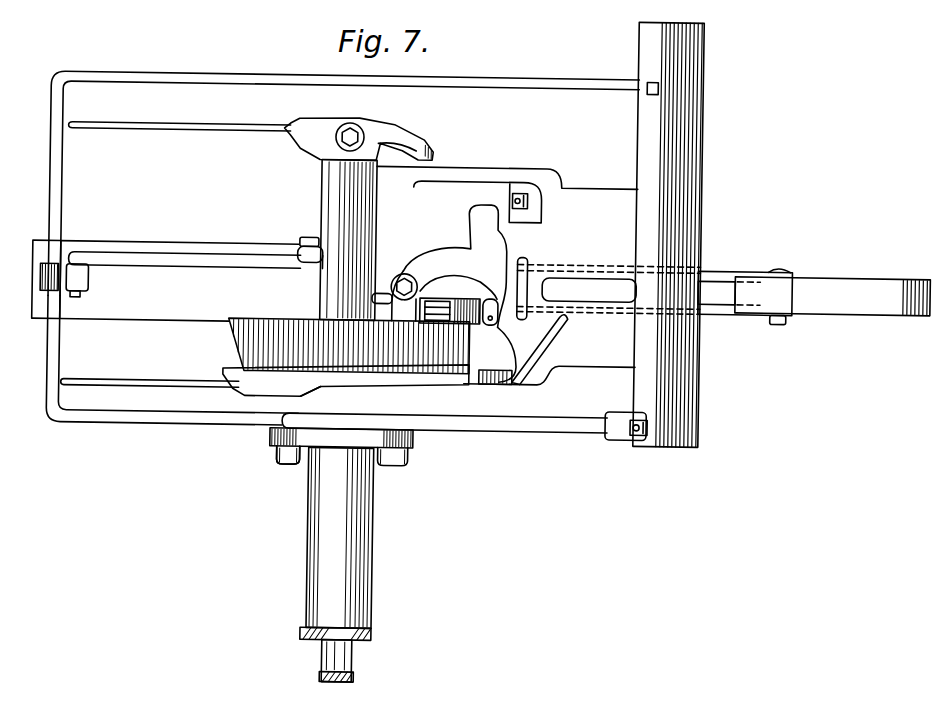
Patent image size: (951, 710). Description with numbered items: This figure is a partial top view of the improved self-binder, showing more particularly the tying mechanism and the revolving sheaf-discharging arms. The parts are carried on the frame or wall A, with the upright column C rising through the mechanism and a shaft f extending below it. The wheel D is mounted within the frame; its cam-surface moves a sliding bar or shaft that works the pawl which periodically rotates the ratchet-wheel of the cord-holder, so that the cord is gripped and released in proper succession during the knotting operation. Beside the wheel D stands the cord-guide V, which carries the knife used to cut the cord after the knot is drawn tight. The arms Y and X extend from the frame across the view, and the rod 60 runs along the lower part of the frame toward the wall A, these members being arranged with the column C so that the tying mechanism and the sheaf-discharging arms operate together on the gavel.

The frame wall A is at (640, 39).
The upper arm Y is at (122, 134).
The lower arm X is at (144, 391).
The wheel D is at (349, 346).
The cord-guide V is at (524, 321).
The column C is at (370, 538).
The shaft f is at (341, 661).
The rod 60 is at (465, 419).